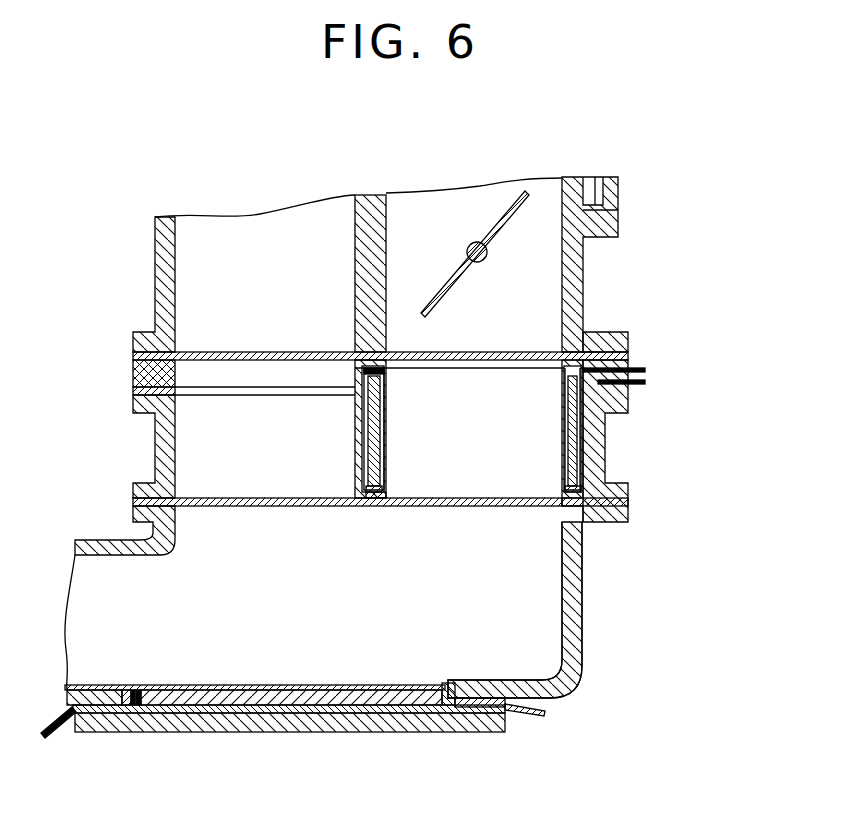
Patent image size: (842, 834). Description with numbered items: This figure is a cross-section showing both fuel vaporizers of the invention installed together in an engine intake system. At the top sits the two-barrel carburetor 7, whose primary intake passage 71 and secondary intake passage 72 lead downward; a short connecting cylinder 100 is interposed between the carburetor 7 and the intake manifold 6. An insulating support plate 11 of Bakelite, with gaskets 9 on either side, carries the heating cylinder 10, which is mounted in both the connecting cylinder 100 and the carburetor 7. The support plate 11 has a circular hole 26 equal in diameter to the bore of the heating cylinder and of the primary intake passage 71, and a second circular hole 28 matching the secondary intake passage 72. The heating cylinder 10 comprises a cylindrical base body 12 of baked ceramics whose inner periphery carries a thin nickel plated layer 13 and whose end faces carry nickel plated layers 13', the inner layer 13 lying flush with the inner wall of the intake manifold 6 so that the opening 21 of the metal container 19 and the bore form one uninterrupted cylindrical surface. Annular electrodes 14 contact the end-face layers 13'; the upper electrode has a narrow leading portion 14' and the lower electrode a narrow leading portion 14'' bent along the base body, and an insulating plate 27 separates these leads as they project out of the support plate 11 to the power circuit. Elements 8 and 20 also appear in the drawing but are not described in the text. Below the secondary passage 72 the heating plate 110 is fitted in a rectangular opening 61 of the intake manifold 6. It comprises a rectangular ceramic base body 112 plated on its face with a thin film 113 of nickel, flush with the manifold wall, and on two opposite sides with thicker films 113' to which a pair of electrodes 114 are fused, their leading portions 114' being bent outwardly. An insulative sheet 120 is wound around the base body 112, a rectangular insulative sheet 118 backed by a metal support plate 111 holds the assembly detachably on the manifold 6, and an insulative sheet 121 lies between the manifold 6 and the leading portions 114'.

The intake manifold 6 is at (583, 621).
The carburetor 7 is at (374, 190).
The damper flap 8 is at (562, 215).
The gaskets 9 is at (140, 355).
The heating cylinder 10 is at (561, 426).
The support plate 11 is at (140, 376).
The cylindrical base body 12 is at (380, 431).
The nickel plated layer 13 is at (402, 431).
The nickel plated layers on end faces 13' is at (403, 386).
The annular electrodes 14 is at (497, 359).
The narrow leading portion 14' is at (628, 347).
The narrow leading portion 14'' is at (653, 392).
The metal container 19 is at (365, 455).
The bottom seal of channel 20 is at (378, 503).
The opening 21 is at (565, 492).
The circular hole 26 is at (387, 358).
The insulating plate 27 is at (625, 392).
The circular hole 28 is at (181, 378).
The rectangular opening 61 is at (454, 700).
The primary intake passage 71 is at (452, 218).
The secondary intake passage 72 is at (258, 243).
The connecting cylinder 100 is at (160, 460).
The heating plate 110 is at (385, 685).
The metal support plate 111 is at (300, 722).
The rectangular base body 112 is at (243, 700).
The thin film of plated nickel 113 is at (193, 669).
The plated films 113' is at (157, 733).
The electrodes 114 is at (157, 672).
The leading portions 114' is at (294, 740).
The rectangular insulative sheet 118 is at (382, 712).
The thermally and electrically insulative sheet 120 is at (125, 690).
The thermally and electrically insulative sheet 121 is at (490, 700).